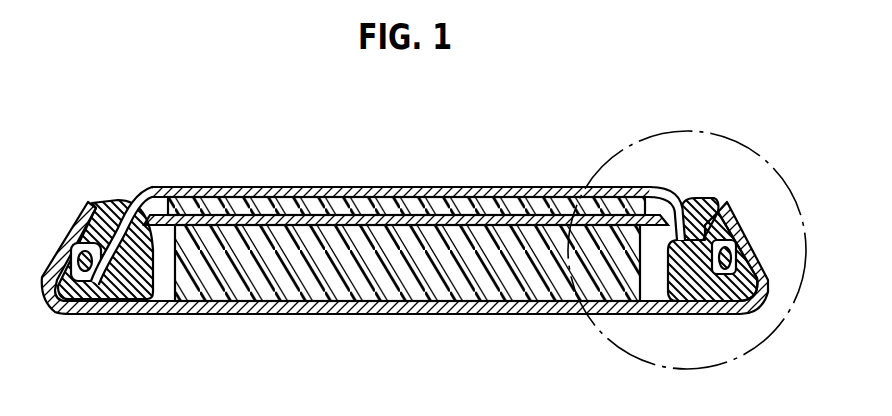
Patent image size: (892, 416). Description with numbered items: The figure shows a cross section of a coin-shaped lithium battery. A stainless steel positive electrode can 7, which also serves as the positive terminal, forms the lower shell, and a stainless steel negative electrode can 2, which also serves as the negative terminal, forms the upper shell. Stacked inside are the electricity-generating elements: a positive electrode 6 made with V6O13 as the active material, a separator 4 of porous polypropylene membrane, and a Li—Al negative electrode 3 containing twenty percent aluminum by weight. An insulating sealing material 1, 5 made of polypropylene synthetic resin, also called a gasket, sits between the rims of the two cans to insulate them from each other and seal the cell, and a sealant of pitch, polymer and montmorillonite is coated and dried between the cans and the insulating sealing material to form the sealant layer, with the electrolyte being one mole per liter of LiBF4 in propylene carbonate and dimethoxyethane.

The insulating sealing material 1 is at (105, 200).
The negative electrode can 2 is at (258, 192).
The negative electrode 3 is at (383, 200).
The separator 4 is at (484, 218).
The insulating sealing material 5 is at (745, 305).
The positive electrode 6 is at (408, 297).
The positive electrode can 7 is at (271, 305).